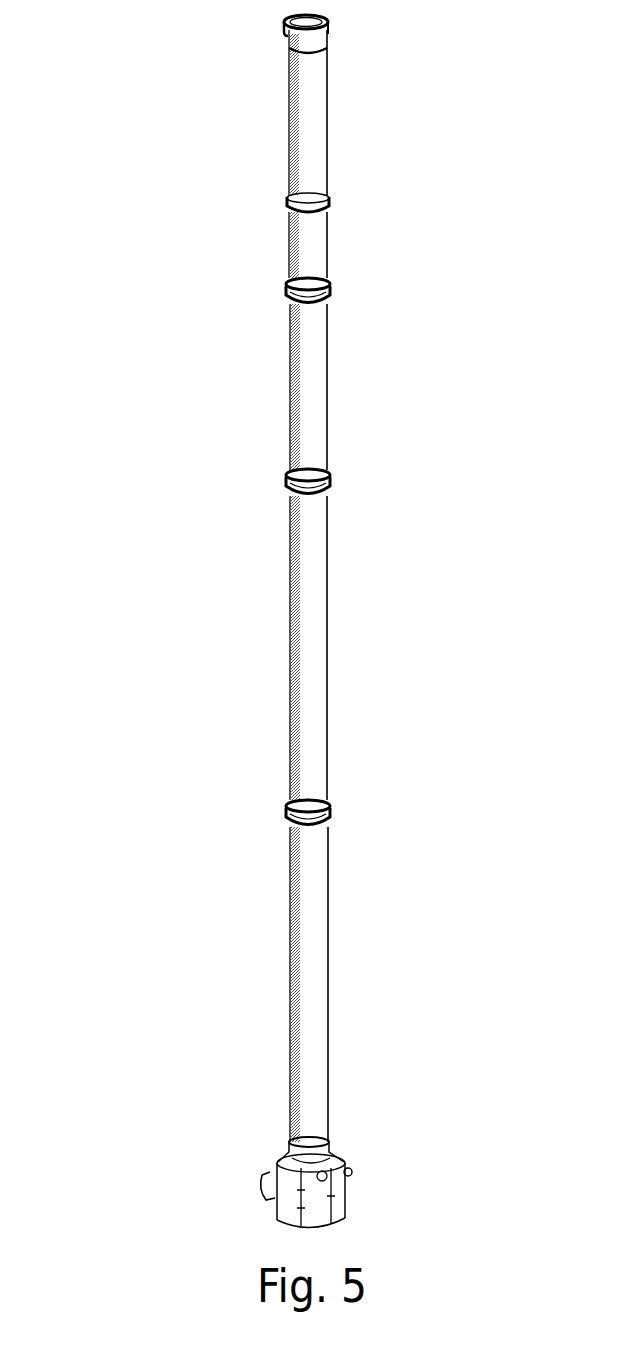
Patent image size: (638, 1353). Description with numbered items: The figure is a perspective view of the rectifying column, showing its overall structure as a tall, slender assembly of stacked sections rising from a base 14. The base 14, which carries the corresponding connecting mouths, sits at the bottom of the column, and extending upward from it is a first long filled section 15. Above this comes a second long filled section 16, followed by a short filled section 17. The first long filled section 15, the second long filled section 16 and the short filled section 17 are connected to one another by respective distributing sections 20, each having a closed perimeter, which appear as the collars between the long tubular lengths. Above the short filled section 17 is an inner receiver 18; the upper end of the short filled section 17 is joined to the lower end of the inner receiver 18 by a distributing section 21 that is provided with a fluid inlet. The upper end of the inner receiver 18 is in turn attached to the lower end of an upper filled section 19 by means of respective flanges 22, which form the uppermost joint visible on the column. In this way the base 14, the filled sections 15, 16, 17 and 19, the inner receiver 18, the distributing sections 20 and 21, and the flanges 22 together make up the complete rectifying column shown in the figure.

The base 14 is at (372, 1177).
The first long filled section 15 is at (292, 950).
The second long filled section 16 is at (292, 628).
The short filled section 17 is at (292, 376).
The inner receiver 18 is at (290, 236).
The upper filled section 19 is at (293, 117).
The distributing section 20 is at (338, 478).
The distributing section with fluid inlet 21 is at (338, 287).
The flanges 22 is at (338, 200).